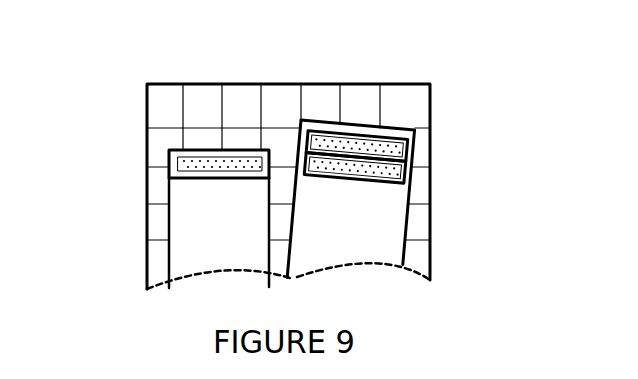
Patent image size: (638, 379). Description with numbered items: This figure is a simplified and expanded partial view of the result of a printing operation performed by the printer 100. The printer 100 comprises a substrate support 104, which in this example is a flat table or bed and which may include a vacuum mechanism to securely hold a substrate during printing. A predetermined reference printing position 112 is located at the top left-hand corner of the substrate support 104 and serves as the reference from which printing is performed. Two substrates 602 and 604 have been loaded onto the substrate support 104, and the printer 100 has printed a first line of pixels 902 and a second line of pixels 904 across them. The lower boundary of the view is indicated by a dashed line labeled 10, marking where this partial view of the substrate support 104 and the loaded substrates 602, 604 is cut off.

The printer 100 is at (85, 146).
The predetermined reference printing position 112 is at (147, 84).
The substrate support 104 is at (317, 84).
The base 10 is at (288, 289).
The substrate 602 is at (213, 150).
The substrate 604 is at (395, 202).
The first line of pixels 902 is at (357, 140).
The second line of pixels 904 is at (170, 165).